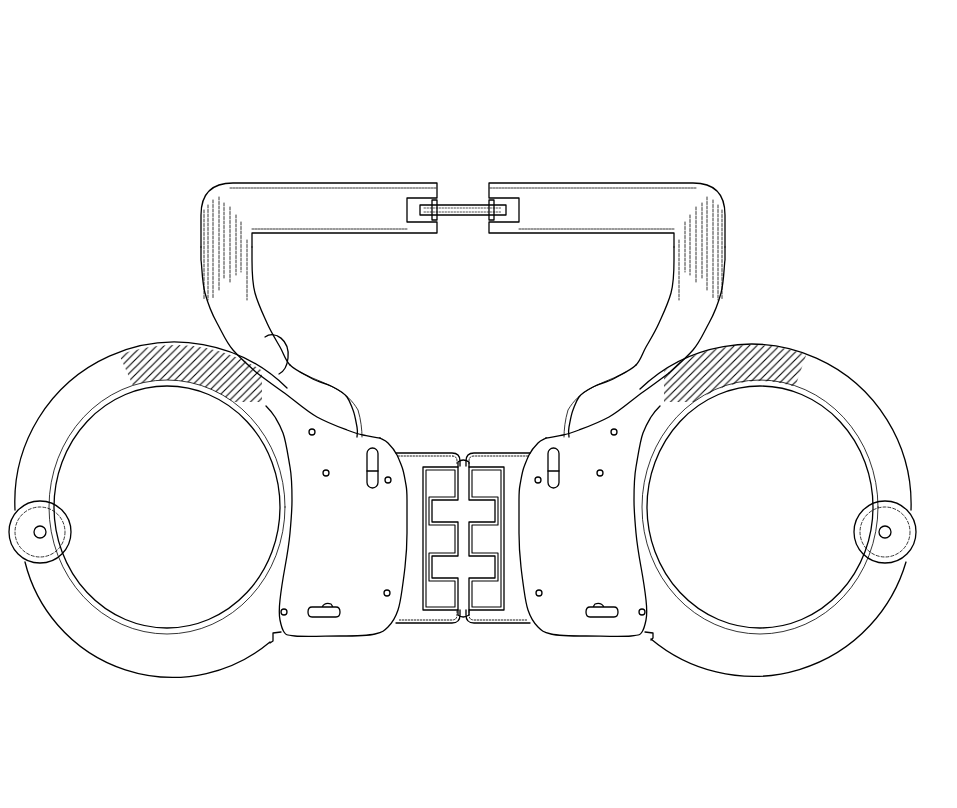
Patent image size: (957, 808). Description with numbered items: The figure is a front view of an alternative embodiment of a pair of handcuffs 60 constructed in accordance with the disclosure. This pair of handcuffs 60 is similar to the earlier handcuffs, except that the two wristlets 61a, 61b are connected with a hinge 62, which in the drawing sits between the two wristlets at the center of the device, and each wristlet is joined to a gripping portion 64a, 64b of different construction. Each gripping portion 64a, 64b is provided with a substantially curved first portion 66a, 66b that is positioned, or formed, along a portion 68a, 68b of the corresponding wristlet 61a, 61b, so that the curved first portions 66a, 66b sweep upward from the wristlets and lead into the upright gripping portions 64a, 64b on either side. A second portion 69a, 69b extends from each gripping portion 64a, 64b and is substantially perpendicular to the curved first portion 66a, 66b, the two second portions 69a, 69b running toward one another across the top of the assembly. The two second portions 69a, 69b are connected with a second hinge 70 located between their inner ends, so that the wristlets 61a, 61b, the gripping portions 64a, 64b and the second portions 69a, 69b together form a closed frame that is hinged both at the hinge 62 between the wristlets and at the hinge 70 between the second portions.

The pair of handcuffs 60 is at (764, 128).
The wristlet 61a is at (88, 635).
The wristlet 61b is at (750, 660).
The hinge 62 is at (477, 597).
The gripping portion 64a is at (207, 235).
The gripping portion 64b is at (703, 237).
The curved first portion 66a is at (290, 363).
The curved first portion 66b is at (643, 368).
The portion of the wristlet 68a is at (253, 365).
The portion of the wristlet 68b is at (663, 380).
The second portion 69a is at (330, 202).
The second portion 69b is at (629, 207).
The hinge 70 is at (468, 203).